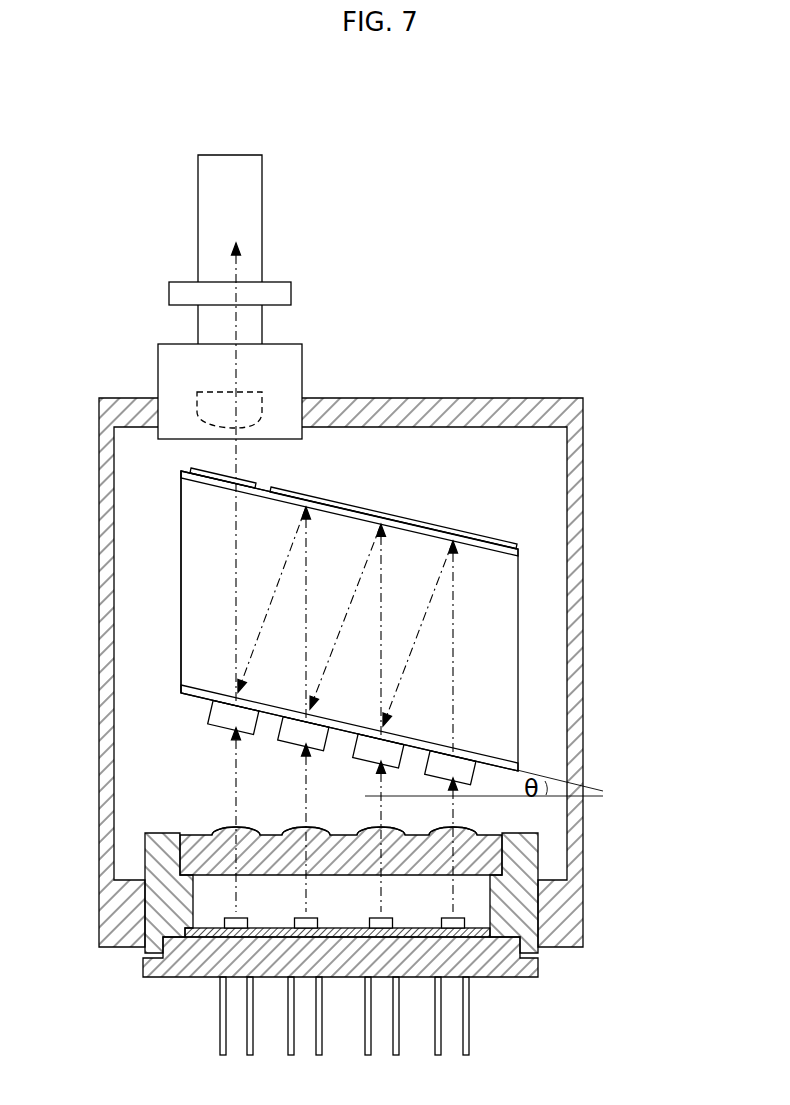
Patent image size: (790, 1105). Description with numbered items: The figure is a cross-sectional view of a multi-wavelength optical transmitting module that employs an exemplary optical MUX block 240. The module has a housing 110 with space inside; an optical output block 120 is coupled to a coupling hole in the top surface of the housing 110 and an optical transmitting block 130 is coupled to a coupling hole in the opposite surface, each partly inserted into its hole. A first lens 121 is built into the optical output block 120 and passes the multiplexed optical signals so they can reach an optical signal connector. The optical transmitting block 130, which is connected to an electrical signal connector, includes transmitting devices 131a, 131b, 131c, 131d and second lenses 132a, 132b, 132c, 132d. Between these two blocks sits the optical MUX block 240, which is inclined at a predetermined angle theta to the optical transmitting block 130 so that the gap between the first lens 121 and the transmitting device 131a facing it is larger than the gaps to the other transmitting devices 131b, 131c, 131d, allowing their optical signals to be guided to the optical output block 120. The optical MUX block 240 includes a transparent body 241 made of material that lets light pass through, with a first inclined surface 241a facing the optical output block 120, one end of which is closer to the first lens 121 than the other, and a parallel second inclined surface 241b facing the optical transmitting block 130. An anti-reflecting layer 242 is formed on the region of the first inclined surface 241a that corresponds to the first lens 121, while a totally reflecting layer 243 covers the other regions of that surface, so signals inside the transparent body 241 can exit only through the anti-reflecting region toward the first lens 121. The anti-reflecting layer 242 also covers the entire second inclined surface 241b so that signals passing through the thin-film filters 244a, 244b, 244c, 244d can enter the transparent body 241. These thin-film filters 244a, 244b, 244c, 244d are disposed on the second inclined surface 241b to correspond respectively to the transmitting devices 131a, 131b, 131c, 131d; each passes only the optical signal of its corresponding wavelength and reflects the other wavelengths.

The housing 110 is at (106, 462).
The optical output block 120 is at (152, 193).
The first lens 121 is at (257, 391).
The optical transmitting block 130 is at (342, 928).
The transmitting device 131a is at (228, 923).
The transmitting device 131b is at (296, 923).
The transmitting device 131c is at (391, 924).
The transmitting device 131d is at (461, 923).
The second lens 132a is at (214, 830).
The second lens 132b is at (290, 830).
The second lens 132c is at (400, 831).
The second lens 132d is at (470, 833).
The optical MUX block 240 is at (342, 626).
The transparent body 241 is at (519, 650).
The first inclined surface 241a is at (504, 553).
The second inclined surface 241b is at (520, 766).
The anti-reflecting layer 242 is at (181, 688).
The totally reflecting layer 243 is at (481, 536).
The thin-film filter 244a is at (214, 702).
The thin-film filter 244b is at (283, 720).
The thin-film filter 244c is at (405, 745).
The thin-film filter 244d is at (477, 768).